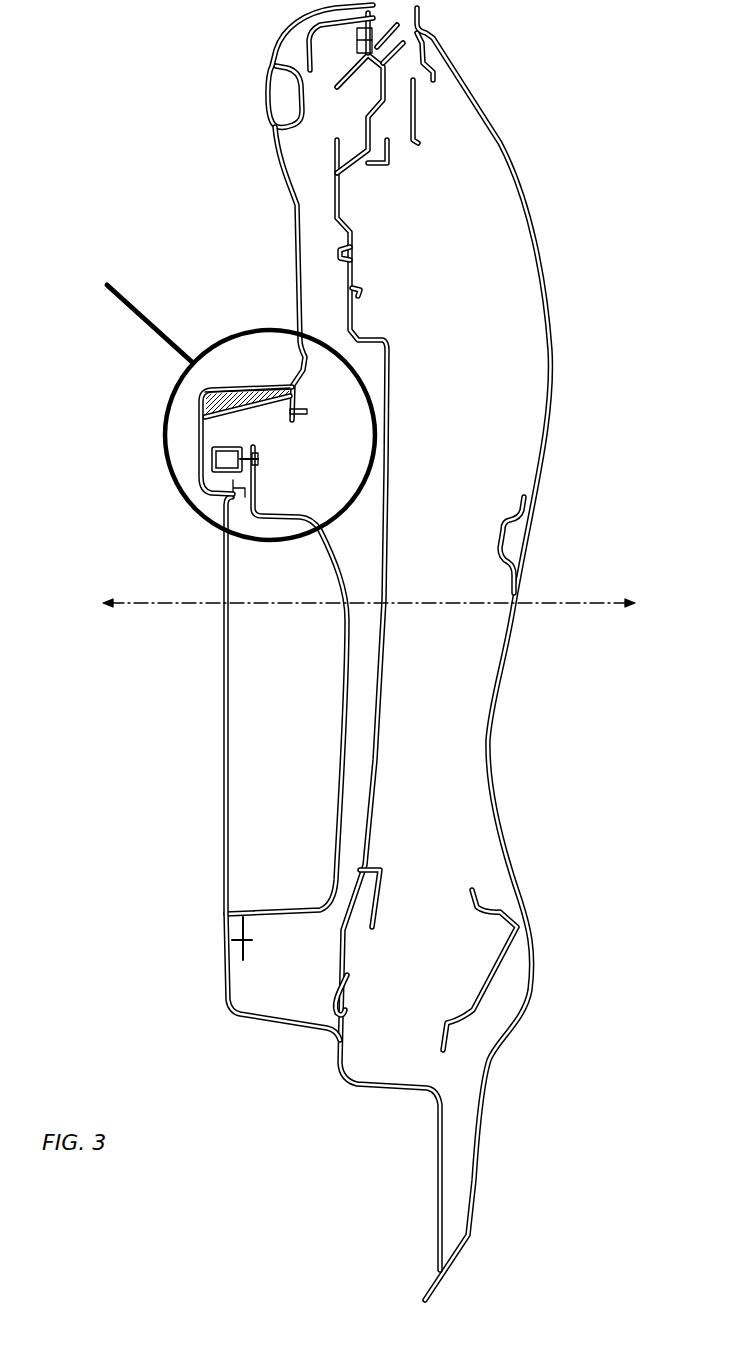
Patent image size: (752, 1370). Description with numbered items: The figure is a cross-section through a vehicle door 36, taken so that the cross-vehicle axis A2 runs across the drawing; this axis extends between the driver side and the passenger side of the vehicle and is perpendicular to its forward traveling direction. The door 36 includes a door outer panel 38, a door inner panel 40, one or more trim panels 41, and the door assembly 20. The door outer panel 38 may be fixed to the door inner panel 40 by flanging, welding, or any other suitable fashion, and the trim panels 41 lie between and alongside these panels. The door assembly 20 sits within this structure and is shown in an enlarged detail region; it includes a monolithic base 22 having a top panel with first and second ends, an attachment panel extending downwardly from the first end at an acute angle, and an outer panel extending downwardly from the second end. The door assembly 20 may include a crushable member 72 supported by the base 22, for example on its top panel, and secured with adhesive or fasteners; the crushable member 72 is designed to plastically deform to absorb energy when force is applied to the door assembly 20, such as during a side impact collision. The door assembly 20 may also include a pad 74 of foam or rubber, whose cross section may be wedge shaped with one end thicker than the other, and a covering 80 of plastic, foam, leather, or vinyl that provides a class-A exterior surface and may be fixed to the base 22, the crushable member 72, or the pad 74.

The door 36 is at (130, 190).
The door outer panel 38 is at (548, 352).
The door inner panel 40 is at (392, 480).
The trim panels 41 is at (298, 250).
The door assembly 20 is at (190, 449).
The monolithic base 22 is at (210, 432).
The crushable member 72 is at (265, 392).
The pad 74 is at (238, 392).
The covering 80 is at (205, 395).
The cross-vehicle axis A2 is at (157, 606).